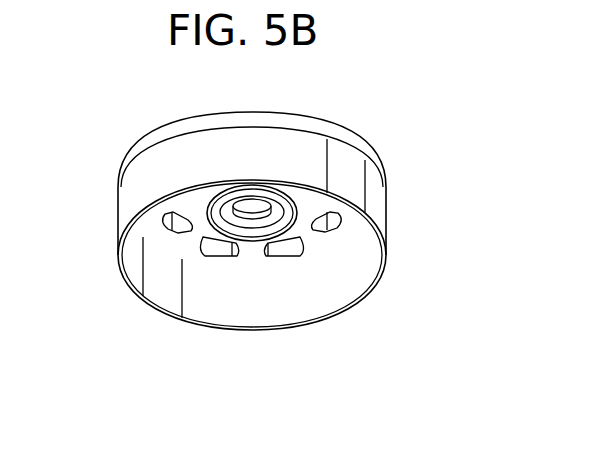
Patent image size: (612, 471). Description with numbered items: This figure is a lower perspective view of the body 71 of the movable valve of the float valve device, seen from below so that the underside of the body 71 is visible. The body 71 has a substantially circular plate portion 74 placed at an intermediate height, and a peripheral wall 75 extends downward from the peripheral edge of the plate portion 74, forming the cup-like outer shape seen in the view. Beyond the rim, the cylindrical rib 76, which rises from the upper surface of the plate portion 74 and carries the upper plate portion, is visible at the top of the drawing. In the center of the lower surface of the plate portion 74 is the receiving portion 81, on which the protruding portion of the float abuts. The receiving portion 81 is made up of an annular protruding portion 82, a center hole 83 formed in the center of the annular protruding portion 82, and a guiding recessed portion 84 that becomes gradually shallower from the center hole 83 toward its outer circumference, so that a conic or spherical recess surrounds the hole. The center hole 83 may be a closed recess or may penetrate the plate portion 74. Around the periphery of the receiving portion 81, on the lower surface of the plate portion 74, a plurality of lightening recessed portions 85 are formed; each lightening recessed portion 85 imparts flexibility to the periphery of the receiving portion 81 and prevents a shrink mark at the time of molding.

The body 71 is at (397, 140).
The plate portion 74 is at (349, 231).
The peripheral wall 75 is at (176, 152).
The cylindrical rib 76 is at (229, 113).
The receiving portion 81 is at (231, 315).
The annular protruding portion 82 is at (219, 228).
The center hole 83 is at (253, 212).
The guiding recessed portion 84 is at (281, 219).
The lightening recessed portion 85 is at (172, 229).